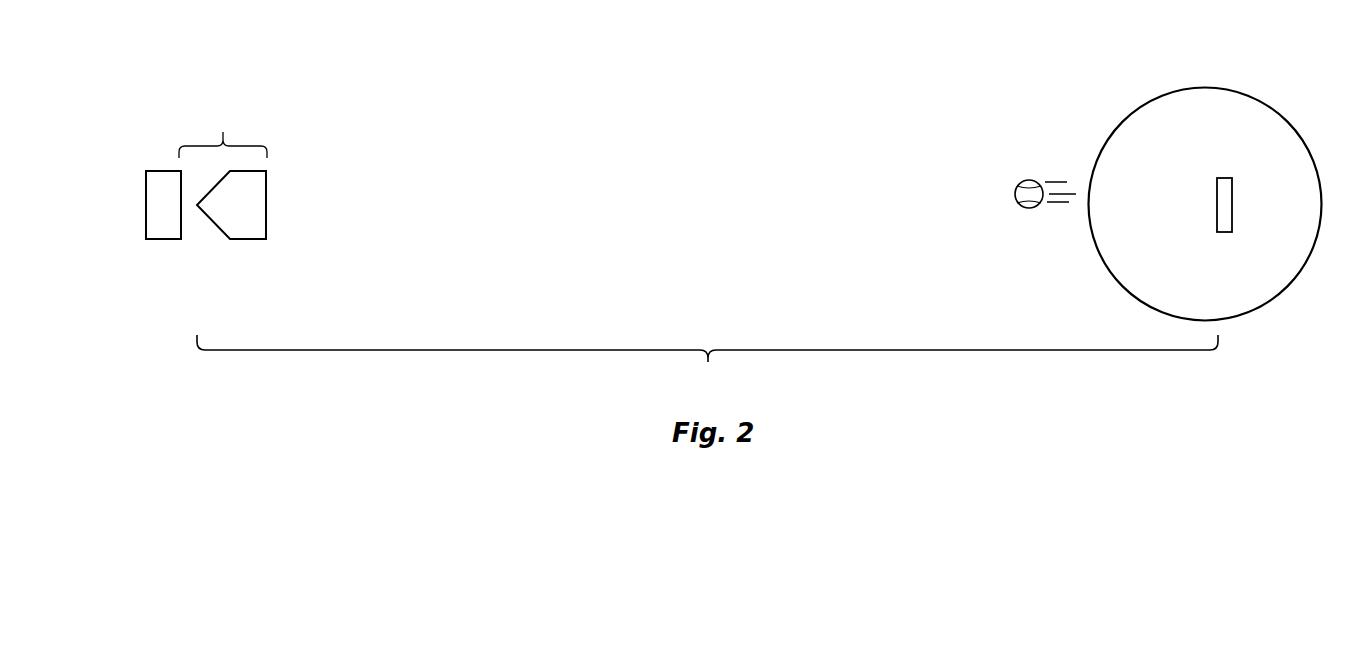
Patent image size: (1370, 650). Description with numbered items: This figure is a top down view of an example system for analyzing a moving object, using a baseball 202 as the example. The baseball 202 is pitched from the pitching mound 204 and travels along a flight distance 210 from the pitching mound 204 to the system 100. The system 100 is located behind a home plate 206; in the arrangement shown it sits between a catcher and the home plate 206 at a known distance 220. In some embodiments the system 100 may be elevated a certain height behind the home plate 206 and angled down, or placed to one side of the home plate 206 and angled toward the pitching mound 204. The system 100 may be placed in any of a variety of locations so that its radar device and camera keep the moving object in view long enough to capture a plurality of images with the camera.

The system 100 is at (153, 171).
The home plate 206 is at (266, 177).
The known distance 220 is at (223, 135).
The baseball 202 is at (1033, 180).
The pitching mound 204 is at (1243, 93).
The flight distance 210 is at (707, 363).